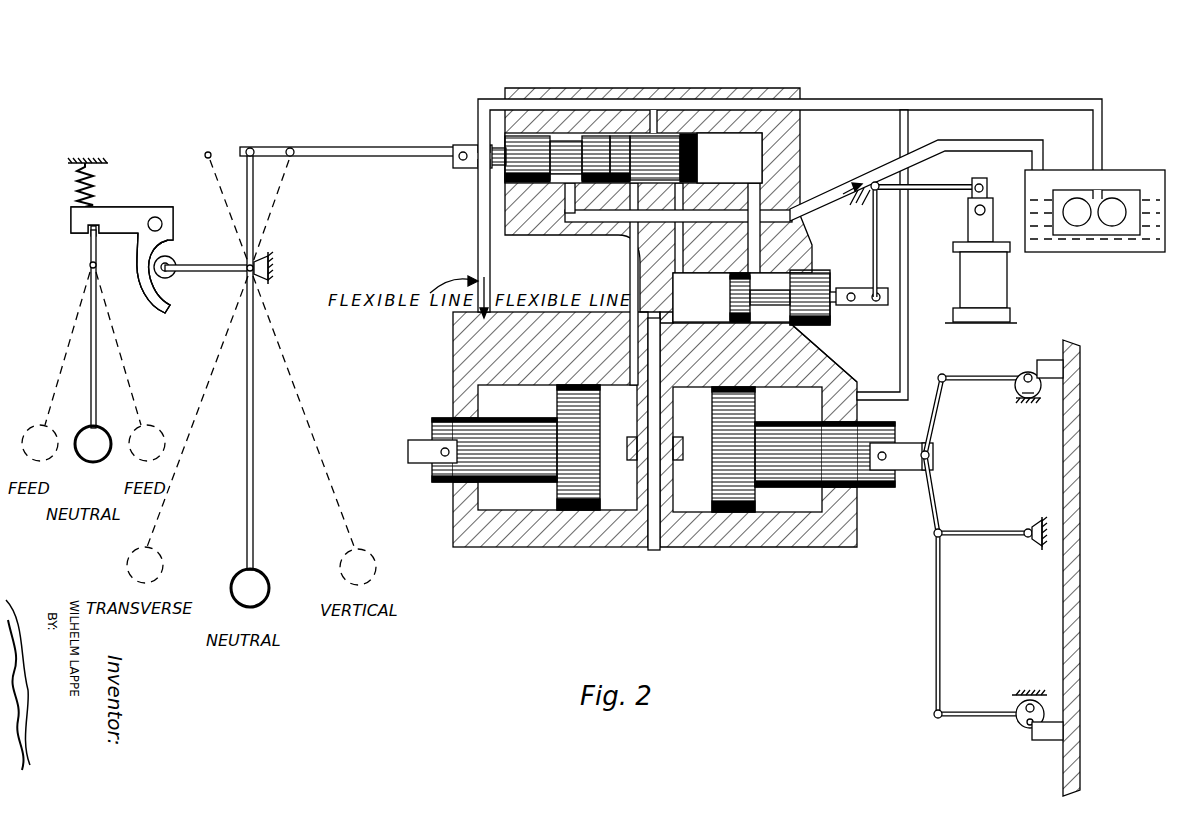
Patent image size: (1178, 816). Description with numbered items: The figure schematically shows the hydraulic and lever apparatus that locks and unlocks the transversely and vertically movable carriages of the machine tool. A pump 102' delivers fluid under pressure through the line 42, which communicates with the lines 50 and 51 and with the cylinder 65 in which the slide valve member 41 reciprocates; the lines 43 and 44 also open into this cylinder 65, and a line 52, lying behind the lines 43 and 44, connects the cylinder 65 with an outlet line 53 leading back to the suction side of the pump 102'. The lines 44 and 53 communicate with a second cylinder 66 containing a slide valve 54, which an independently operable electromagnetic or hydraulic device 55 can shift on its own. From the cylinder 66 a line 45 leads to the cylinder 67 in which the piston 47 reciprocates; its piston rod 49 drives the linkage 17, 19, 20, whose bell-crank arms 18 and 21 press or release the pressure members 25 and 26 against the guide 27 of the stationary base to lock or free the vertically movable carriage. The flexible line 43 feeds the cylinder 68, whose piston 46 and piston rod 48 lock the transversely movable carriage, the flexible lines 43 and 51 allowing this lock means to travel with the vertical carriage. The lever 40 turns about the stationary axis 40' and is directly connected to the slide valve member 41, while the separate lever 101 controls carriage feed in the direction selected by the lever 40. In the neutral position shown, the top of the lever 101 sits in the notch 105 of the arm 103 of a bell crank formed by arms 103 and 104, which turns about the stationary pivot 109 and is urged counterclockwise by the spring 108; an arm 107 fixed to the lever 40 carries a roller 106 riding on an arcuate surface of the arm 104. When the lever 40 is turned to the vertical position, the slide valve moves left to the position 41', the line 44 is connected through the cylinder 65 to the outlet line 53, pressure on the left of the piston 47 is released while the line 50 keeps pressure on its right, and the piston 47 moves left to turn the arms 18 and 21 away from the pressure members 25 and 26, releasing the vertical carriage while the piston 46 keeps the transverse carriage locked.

The spring 108 is at (83, 160).
The notch 105 is at (97, 228).
The arm of bell crank 103 is at (130, 208).
The arm of bell crank 104 is at (160, 247).
The stationary pivot 109 is at (160, 222).
The roller 106 is at (168, 277).
The arm 107 is at (207, 280).
The operating member 101 is at (97, 377).
The operating member 40 is at (292, 377).
The stationary axis 40' is at (274, 284).
The slide valve member 41 is at (630, 167).
The dotted line position of slide valve 41' is at (584, 122).
The pressure line 42 is at (758, 108).
The cylinder 65 is at (747, 158).
The outlet line 53 is at (795, 205).
The pump 102' is at (1108, 185).
The line 52 is at (571, 192).
The flexible line 43 is at (624, 283).
The line 44 is at (679, 242).
The cylinder 66 is at (812, 271).
The slide valve 54 is at (752, 322).
The electromagnetic or hydraulic device 55 is at (993, 284).
The line 50 is at (874, 393).
The line 45 is at (700, 343).
The flexible line 51 is at (485, 354).
The piston rod 48 is at (513, 460).
The piston 46 is at (580, 490).
The cylinder 68 is at (620, 500).
The cylinder 67 is at (697, 500).
The piston 47 is at (736, 492).
The piston rod 49 is at (797, 462).
The linkage 17 is at (937, 420).
The long arm of bell crank 18 is at (969, 378).
The linkage 19 is at (978, 533).
The linkage 20 is at (937, 650).
The long arm of bell crank 21 is at (952, 722).
The pressure member 25 is at (1047, 360).
The pressure member 26 is at (1047, 733).
The guide 27 is at (1073, 613).